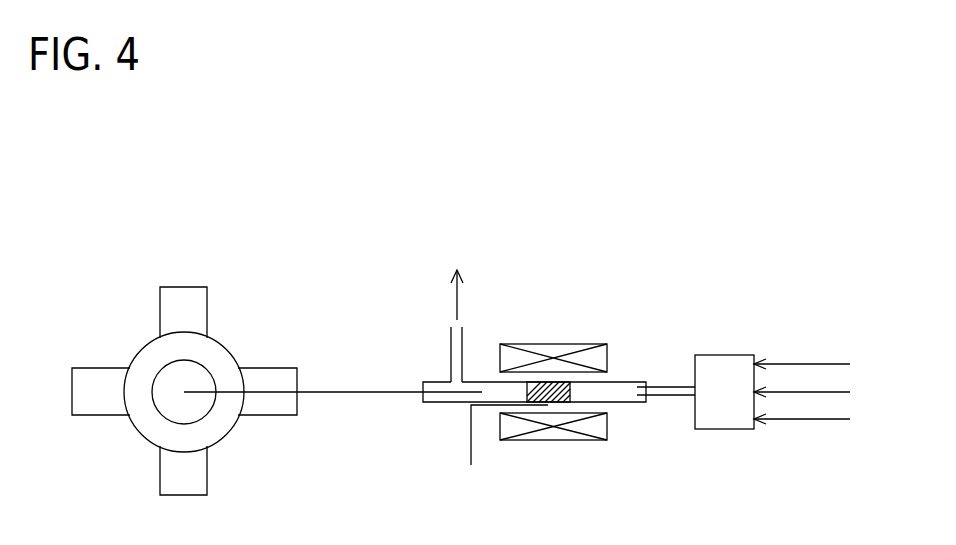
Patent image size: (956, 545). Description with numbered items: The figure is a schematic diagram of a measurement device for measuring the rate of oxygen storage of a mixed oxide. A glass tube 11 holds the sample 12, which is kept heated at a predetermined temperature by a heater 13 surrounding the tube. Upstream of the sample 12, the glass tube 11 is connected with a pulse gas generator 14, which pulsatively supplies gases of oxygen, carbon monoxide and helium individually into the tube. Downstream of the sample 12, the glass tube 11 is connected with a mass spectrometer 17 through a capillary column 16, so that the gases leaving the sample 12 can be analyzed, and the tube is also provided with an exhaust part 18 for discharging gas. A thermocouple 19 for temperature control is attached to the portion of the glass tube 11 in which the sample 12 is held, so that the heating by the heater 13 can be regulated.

The glass tube 11 is at (625, 383).
The sample 12 is at (552, 383).
The heater 13 is at (553, 440).
The pulse gas generator 14 is at (727, 355).
The capillary column 16 is at (344, 392).
The mass spectrometer 17 is at (186, 287).
The exhaust part 18 is at (451, 347).
The thermocouple 19 is at (471, 443).